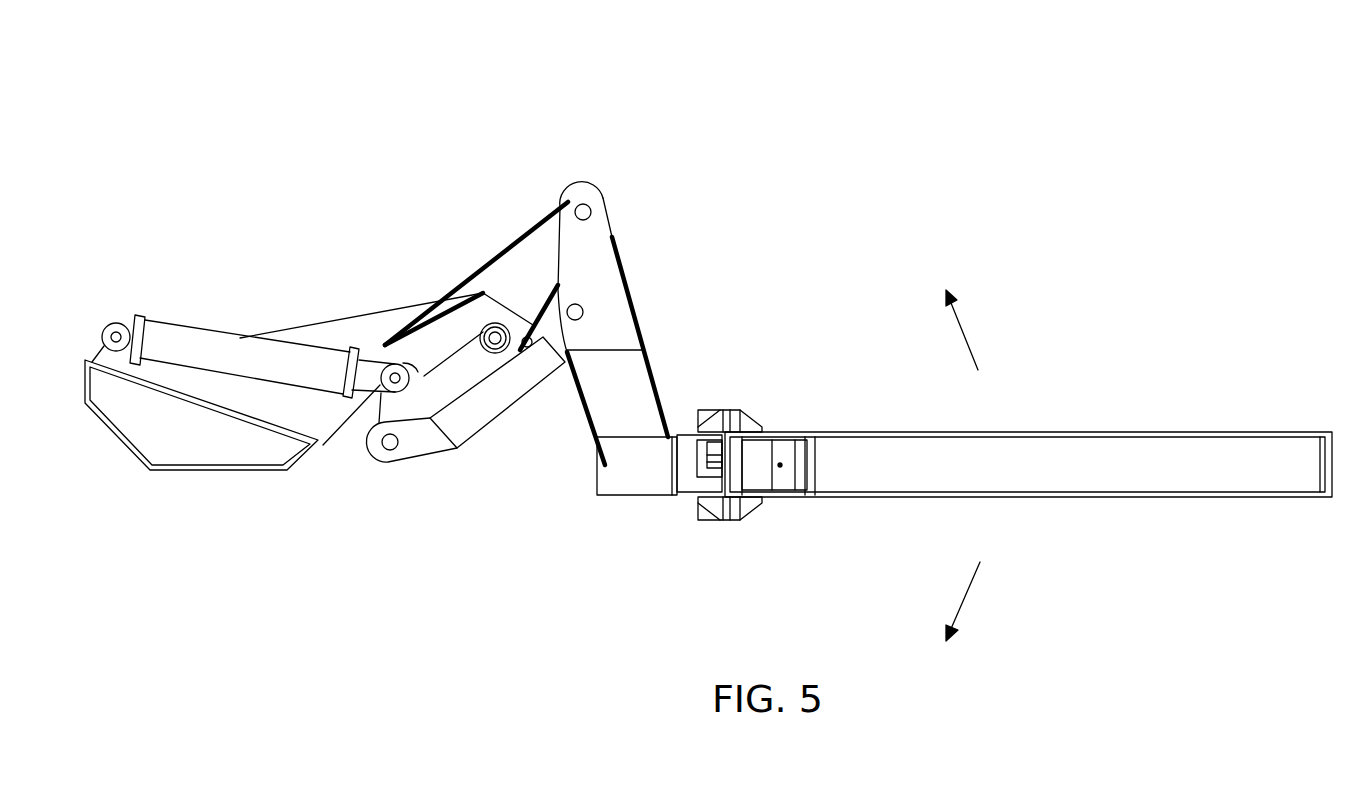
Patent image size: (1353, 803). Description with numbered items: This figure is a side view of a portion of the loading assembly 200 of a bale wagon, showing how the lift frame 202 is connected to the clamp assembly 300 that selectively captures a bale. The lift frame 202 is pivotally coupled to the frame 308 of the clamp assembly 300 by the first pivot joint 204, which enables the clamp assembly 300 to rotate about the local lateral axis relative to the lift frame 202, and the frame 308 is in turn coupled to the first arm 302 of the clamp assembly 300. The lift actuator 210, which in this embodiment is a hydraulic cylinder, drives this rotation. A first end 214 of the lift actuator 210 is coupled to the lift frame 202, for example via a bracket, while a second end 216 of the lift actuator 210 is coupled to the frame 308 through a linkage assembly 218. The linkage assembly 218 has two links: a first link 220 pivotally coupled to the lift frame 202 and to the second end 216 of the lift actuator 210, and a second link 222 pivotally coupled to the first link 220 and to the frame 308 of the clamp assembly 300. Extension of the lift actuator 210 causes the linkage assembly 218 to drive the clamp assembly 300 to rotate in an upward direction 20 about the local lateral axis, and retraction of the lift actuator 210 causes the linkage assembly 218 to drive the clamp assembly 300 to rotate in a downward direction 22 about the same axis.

The loading assembly 200 is at (562, 130).
The lift frame 202 is at (362, 333).
The first pivot joint 204 is at (588, 210).
The lift actuator 210 is at (212, 342).
The first end 214 is at (115, 322).
The second end 216 is at (370, 388).
The linkage assembly 218 is at (498, 437).
The first link 220 is at (453, 350).
The second link 222 is at (513, 395).
The clamp assembly 300 is at (1079, 295).
The first arm 302 is at (1068, 428).
The frame 308 is at (622, 313).
The upward direction 20 is at (967, 343).
The downward direction 22 is at (968, 593).